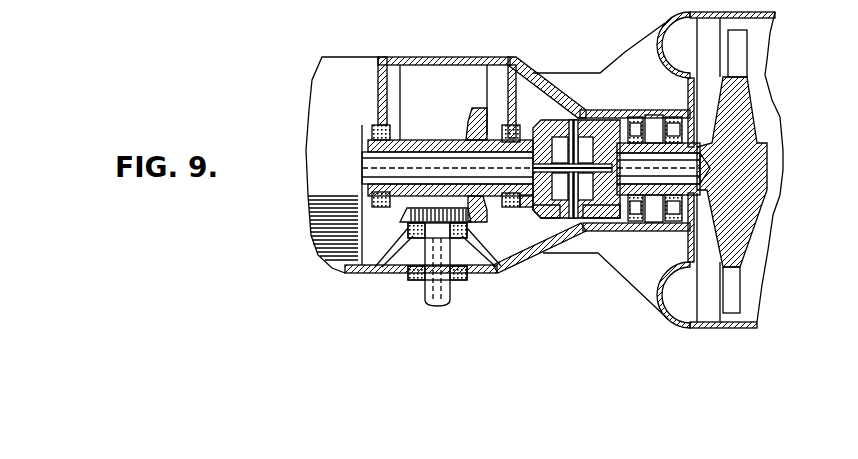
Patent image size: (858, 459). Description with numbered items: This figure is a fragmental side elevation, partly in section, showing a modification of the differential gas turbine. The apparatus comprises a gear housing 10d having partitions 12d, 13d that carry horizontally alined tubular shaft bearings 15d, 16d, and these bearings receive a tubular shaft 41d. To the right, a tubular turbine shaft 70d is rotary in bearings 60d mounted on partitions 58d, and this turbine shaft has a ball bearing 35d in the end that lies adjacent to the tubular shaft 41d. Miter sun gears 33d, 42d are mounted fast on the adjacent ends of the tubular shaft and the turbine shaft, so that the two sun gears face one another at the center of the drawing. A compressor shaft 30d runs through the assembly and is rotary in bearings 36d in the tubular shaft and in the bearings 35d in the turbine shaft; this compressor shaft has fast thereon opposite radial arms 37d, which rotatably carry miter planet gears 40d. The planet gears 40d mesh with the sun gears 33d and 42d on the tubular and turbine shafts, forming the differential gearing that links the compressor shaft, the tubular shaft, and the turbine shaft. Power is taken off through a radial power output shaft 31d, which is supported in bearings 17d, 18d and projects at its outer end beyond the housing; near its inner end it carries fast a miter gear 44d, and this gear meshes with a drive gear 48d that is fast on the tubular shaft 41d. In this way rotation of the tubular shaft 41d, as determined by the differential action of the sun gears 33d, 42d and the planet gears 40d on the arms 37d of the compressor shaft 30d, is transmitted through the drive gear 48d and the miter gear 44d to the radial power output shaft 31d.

The gear housing 10d is at (522, 264).
The partition 12d is at (378, 92).
The partition 13d is at (508, 80).
The tubular shaft bearing 15d is at (372, 132).
The tubular shaft bearing 16d is at (513, 126).
The bearing 17d is at (422, 239).
The bearing 18d is at (422, 280).
The compressor shaft 30d is at (365, 153).
The radial power output shaft 31d is at (443, 305).
The miter sun gear 33d is at (530, 207).
The ball bearing 35d is at (612, 176).
The bearings 36d is at (548, 219).
The radial arms 37d is at (572, 121).
The miter planet gears 40d is at (594, 219).
The tubular shaft 41d is at (414, 141).
The miter sun gear 42d is at (605, 119).
The miter gear 44d is at (403, 210).
The drive gear 48d is at (472, 114).
The partitions 58d is at (680, 110).
The bearings 60d is at (624, 222).
The tubular turbine shaft 70d is at (652, 224).